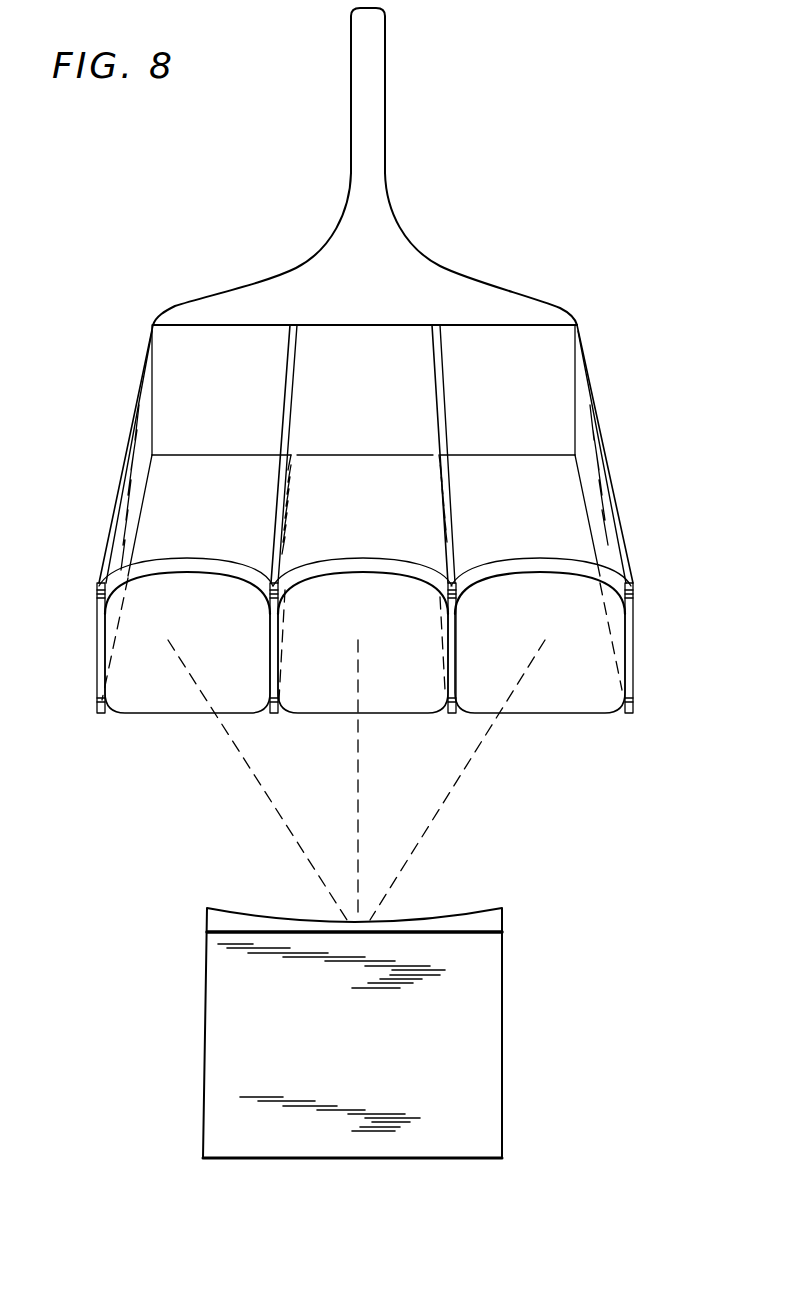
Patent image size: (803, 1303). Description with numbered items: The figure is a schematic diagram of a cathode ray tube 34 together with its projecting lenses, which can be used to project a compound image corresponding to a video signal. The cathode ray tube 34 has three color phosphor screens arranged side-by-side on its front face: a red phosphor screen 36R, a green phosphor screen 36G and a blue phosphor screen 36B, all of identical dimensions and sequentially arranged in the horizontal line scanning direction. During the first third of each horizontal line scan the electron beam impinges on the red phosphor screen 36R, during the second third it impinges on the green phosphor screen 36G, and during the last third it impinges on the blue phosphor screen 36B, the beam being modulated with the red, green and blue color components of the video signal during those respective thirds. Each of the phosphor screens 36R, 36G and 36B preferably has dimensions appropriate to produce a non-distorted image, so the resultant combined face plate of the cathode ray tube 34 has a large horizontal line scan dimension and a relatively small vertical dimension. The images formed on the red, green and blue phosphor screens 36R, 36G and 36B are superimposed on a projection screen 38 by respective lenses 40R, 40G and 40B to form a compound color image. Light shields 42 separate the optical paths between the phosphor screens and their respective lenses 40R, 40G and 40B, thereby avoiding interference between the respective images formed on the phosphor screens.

The cathode ray tube 34 is at (248, 244).
The red phosphor screen 36R is at (195, 332).
The green phosphor screen 36G is at (385, 335).
The blue phosphor screen 36B is at (548, 330).
The projection screen 38 is at (207, 958).
The red lens 40R is at (133, 705).
The green lens 40G is at (302, 710).
The blue lens 40B is at (592, 707).
The light shields 42 is at (118, 492).